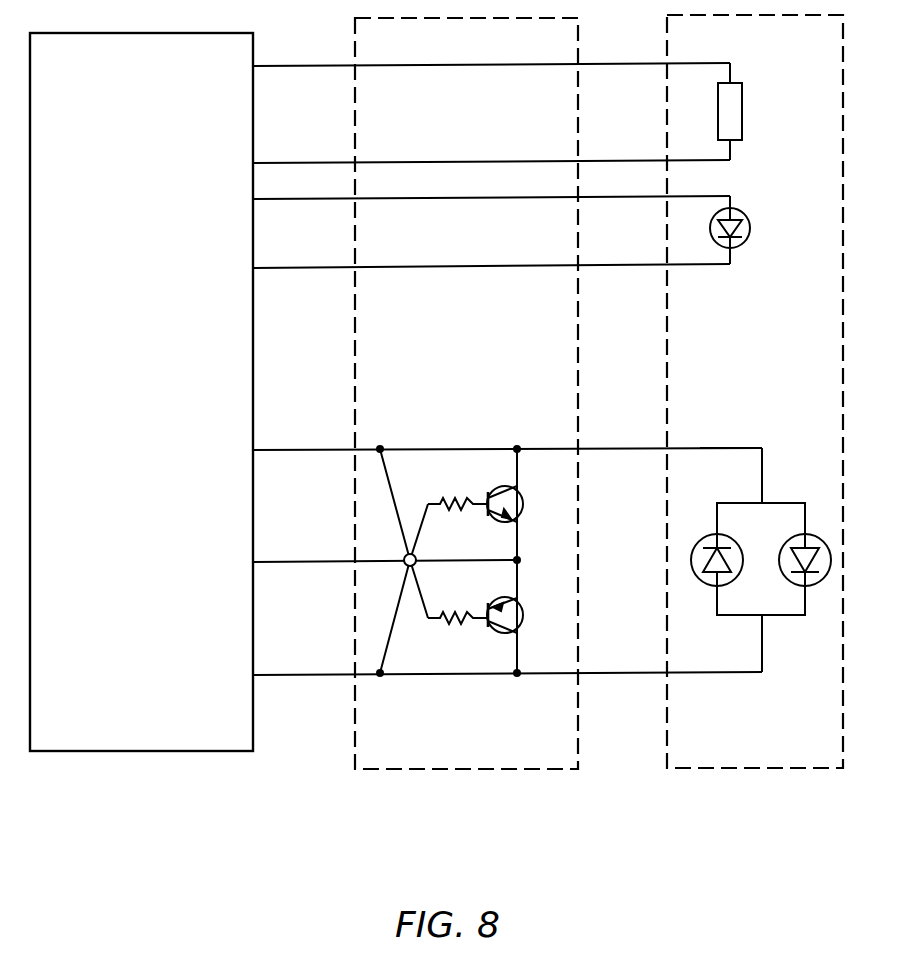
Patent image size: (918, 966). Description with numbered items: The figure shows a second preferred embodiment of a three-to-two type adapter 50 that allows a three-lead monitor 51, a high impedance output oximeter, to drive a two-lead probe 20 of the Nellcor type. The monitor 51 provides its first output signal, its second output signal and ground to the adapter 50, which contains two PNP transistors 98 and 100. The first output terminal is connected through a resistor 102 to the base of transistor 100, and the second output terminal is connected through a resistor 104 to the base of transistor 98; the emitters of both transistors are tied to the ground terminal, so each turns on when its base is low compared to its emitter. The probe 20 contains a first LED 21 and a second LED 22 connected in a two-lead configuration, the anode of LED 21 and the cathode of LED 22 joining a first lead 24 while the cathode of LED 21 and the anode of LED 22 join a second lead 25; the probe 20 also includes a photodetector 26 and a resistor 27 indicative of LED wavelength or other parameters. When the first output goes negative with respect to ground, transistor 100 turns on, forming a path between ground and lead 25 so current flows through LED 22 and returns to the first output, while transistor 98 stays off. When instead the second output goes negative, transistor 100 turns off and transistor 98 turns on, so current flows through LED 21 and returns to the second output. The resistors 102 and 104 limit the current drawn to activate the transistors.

The 3-lead monitor 51 is at (180, 752).
The 3-to-2 type adapter 50 is at (500, 769).
The 2-lead probe 20 is at (790, 768).
The first LED 21 is at (826, 544).
The second LED 22 is at (733, 543).
The first lead 24 is at (720, 448).
The second lead 25 is at (763, 645).
The photodetector 26 is at (750, 231).
The resistor 27 is at (742, 108).
The transistor 98 is at (517, 486).
The transistor 100 is at (505, 597).
The resistor 102 is at (473, 621).
The resistor 104 is at (463, 497).